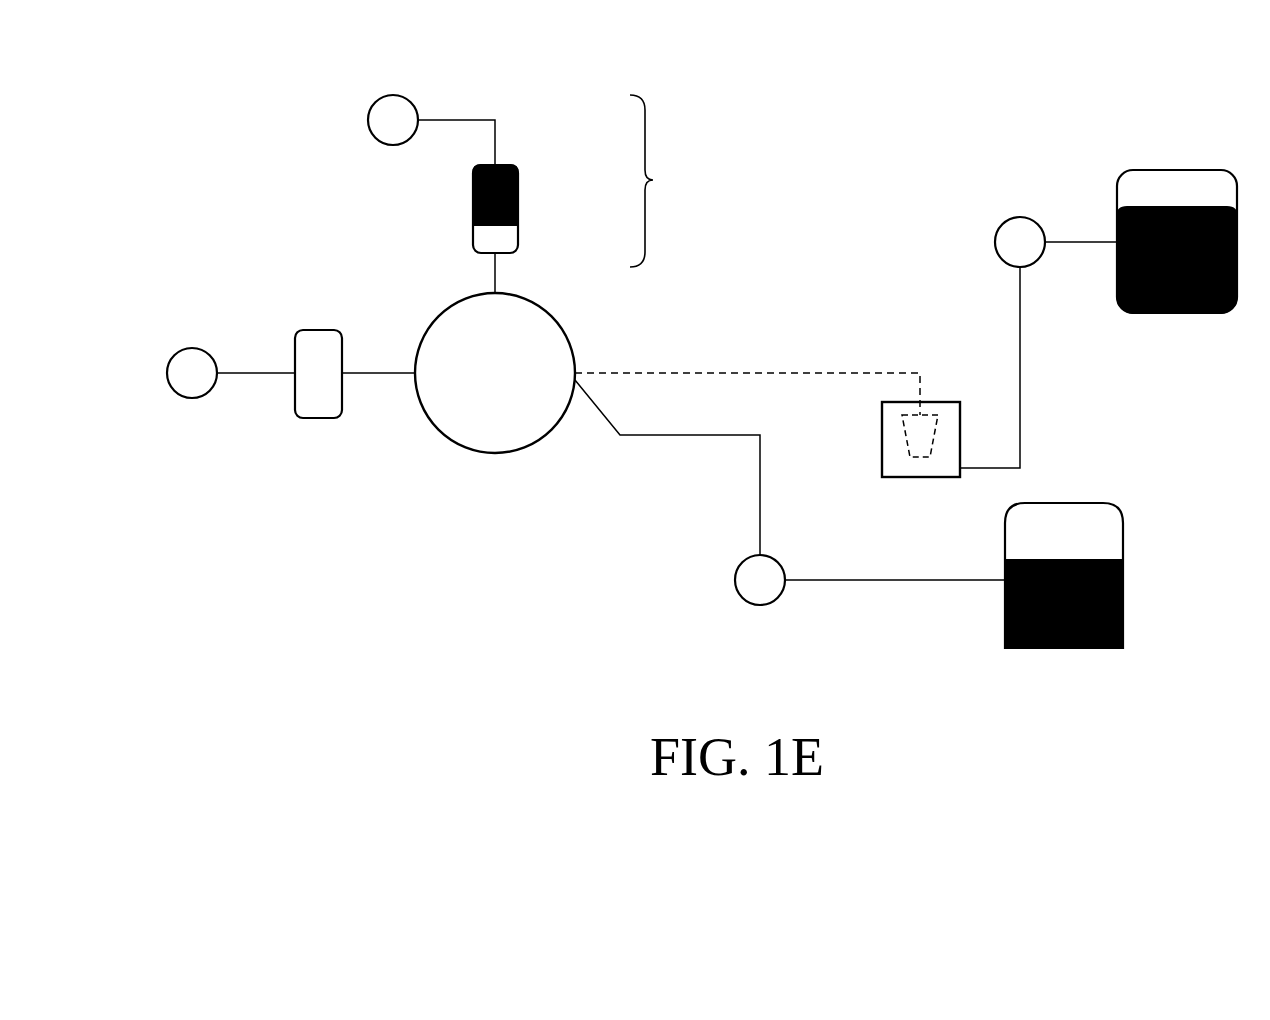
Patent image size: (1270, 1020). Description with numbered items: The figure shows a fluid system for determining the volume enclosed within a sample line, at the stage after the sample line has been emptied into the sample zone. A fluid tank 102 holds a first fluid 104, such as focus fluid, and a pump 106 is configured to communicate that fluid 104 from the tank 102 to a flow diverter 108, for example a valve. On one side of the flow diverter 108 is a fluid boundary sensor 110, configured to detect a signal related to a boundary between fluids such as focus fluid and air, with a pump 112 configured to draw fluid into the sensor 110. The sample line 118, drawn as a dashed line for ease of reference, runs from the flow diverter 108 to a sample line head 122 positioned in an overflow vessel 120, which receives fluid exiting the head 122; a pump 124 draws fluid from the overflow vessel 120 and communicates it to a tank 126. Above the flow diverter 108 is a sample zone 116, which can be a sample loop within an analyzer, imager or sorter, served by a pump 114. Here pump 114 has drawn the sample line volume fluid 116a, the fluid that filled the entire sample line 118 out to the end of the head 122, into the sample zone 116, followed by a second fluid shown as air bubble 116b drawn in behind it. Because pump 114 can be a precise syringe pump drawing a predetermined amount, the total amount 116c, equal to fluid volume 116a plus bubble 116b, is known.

The fluid tank 102 is at (1123, 513).
The first fluid 104 is at (1123, 588).
The pump 106 is at (735, 580).
The flow diverter 108 is at (495, 453).
The fluid boundary sensor 110 is at (317, 418).
The pump 112 is at (192, 398).
The pump 114 is at (393, 145).
The sample zone 116 is at (544, 229).
The sample line volume fluid 116a is at (518, 187).
The second fluid bubble 116b is at (497, 238).
The amount of fluid drawn into sample zone 116c is at (670, 181).
The sample line 118 is at (748, 373).
The overflow vessel 120 is at (882, 440).
The sample line head 122 is at (915, 457).
The pump 124 is at (1020, 217).
The tank 126 is at (1177, 170).